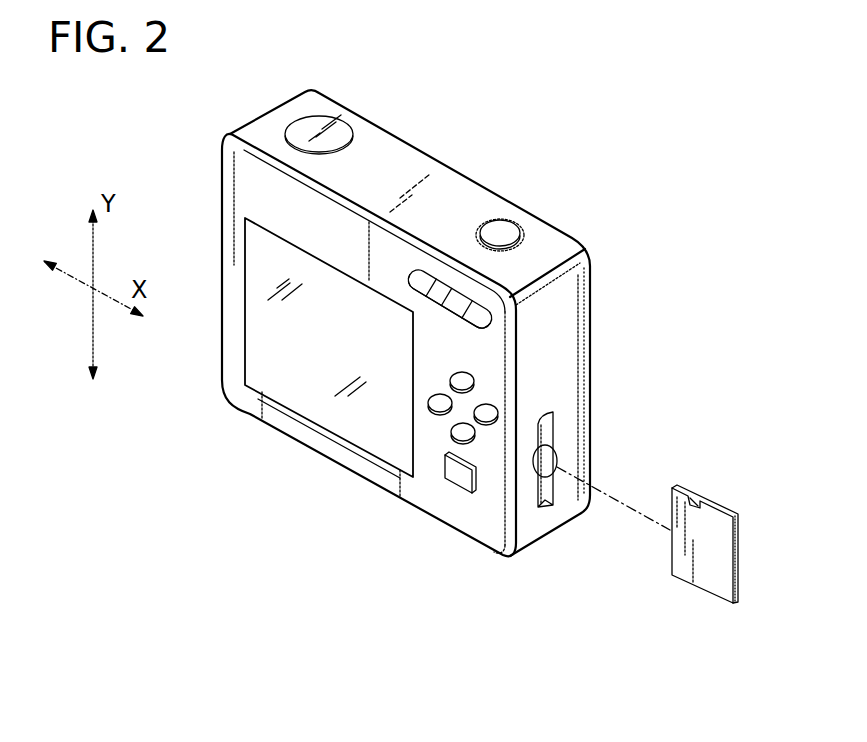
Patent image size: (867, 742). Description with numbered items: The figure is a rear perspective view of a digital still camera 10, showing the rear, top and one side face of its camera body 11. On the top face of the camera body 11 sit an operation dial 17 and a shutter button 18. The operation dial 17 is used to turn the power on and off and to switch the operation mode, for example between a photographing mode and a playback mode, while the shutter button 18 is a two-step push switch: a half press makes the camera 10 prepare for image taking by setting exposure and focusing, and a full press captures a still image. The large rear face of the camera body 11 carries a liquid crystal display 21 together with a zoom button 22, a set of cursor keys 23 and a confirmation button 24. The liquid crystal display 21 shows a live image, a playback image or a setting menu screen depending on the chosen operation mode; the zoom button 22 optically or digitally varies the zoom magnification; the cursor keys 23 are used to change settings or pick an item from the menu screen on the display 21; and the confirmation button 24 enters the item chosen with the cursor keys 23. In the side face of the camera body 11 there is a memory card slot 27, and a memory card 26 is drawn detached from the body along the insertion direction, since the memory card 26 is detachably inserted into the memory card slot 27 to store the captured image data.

The digital still camera 10 is at (448, 329).
The camera body 11 is at (450, 182).
The operation dial 17 is at (318, 128).
The shutter button 18 is at (502, 232).
The liquid crystal display 21 is at (284, 321).
The zoom button 22 is at (478, 292).
The cursor keys 23 is at (472, 379).
The confirmation button 24 is at (455, 477).
The memory card 26 is at (716, 500).
The memory card slot 27 is at (552, 437).